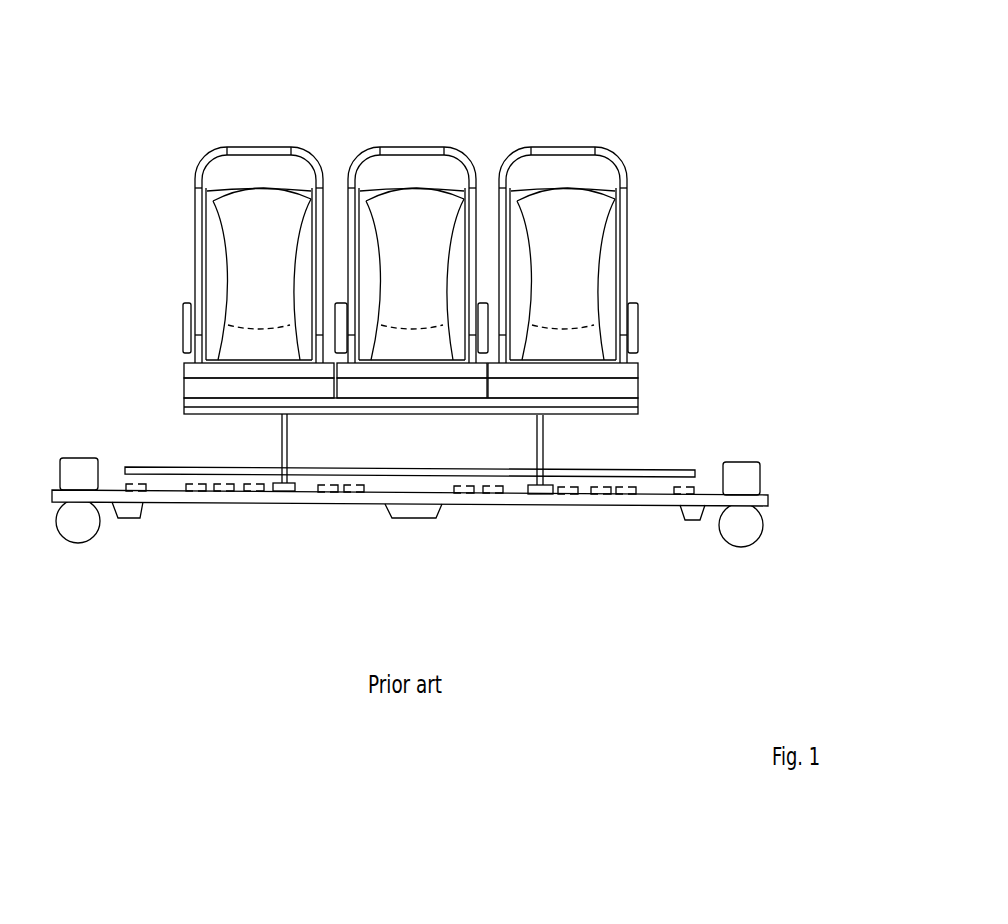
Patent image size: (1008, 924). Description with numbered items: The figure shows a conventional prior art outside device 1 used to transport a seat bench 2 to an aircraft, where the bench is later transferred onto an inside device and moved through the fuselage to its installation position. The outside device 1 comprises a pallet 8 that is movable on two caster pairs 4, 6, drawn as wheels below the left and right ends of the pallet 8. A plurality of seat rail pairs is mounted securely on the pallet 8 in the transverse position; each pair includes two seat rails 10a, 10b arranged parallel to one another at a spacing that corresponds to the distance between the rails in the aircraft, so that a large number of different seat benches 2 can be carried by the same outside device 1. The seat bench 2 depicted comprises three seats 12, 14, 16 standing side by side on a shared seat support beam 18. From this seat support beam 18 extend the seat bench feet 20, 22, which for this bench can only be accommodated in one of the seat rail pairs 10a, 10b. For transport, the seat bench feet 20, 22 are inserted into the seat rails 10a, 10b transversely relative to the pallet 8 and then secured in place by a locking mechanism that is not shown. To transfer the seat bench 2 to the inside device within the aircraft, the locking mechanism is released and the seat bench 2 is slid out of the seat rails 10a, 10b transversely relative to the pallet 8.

The outside device 1 is at (777, 446).
The seat bench 2 is at (672, 237).
The caster pair 4 is at (78, 518).
The caster pair 6 is at (743, 518).
The pallet 8 is at (753, 500).
The seat rail 10a is at (295, 490).
The seat rail 10b is at (528, 490).
The seat 12 is at (263, 172).
The seat 14 is at (413, 172).
The seat 16 is at (566, 172).
The seat support beam 18 is at (640, 468).
The seat bench foot 20 is at (282, 490).
The seat bench foot 22 is at (543, 477).